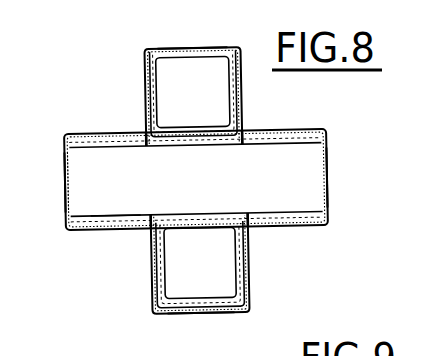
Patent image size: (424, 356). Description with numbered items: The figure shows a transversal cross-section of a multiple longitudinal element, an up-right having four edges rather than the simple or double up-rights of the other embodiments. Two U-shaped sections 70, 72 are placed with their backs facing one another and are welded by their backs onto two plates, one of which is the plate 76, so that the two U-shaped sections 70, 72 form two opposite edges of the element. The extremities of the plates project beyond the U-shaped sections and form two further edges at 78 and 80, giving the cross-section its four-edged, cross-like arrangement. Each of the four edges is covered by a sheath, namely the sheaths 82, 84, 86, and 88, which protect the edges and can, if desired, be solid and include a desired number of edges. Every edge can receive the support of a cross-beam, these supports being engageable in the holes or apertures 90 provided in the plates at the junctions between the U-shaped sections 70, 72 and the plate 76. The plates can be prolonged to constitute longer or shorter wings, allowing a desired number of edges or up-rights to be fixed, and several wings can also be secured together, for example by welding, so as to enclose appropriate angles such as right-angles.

The U-shaped section 70 is at (238, 100).
The U-shaped section 72 is at (164, 275).
The plate 76 is at (105, 220).
The edge 78 is at (325, 178).
The edge 80 is at (78, 167).
The sheath 82 is at (201, 48).
The sheath 84 is at (327, 201).
The sheath 86 is at (210, 313).
The sheath 88 is at (65, 200).
The holes or apertures 90 is at (151, 213).